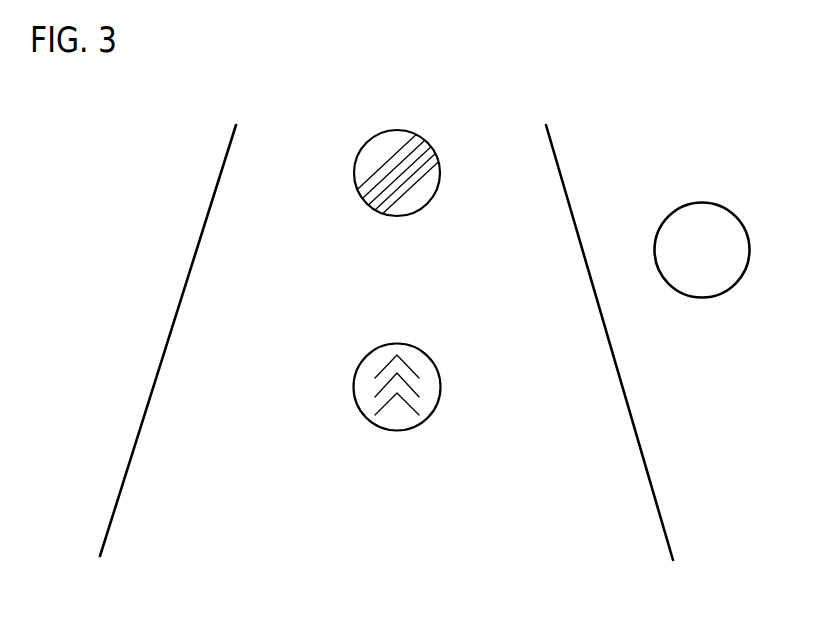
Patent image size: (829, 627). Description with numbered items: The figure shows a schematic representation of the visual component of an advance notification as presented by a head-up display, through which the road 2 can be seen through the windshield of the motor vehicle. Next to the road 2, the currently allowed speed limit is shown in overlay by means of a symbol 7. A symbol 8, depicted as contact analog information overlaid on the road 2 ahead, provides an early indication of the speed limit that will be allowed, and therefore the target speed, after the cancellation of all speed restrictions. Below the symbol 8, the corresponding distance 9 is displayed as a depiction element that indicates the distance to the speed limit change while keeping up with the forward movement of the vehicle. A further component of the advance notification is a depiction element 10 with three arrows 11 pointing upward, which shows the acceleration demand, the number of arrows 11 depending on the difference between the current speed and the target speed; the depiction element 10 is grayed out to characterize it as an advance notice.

The road 2 is at (634, 422).
The symbol 7 is at (697, 202).
The symbol 8 is at (377, 133).
The distance 9 is at (447, 243).
The depiction element 10 is at (450, 402).
The arrows 11 is at (363, 383).